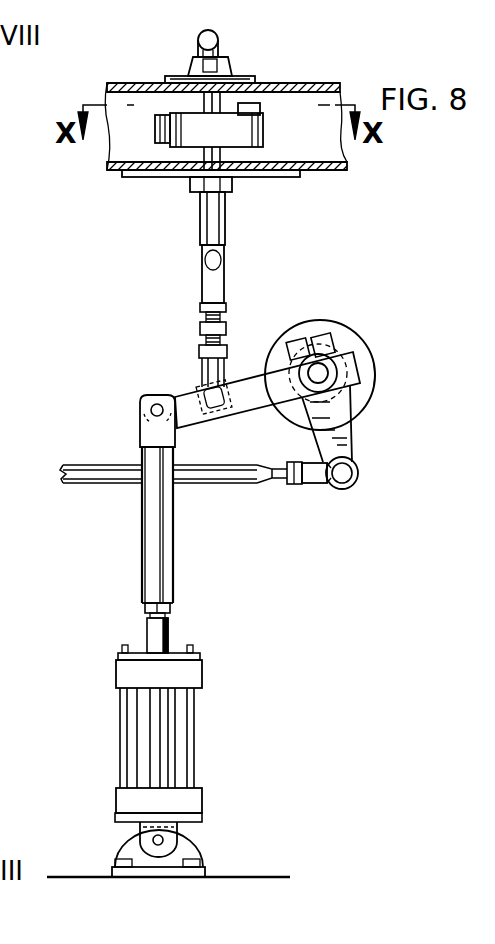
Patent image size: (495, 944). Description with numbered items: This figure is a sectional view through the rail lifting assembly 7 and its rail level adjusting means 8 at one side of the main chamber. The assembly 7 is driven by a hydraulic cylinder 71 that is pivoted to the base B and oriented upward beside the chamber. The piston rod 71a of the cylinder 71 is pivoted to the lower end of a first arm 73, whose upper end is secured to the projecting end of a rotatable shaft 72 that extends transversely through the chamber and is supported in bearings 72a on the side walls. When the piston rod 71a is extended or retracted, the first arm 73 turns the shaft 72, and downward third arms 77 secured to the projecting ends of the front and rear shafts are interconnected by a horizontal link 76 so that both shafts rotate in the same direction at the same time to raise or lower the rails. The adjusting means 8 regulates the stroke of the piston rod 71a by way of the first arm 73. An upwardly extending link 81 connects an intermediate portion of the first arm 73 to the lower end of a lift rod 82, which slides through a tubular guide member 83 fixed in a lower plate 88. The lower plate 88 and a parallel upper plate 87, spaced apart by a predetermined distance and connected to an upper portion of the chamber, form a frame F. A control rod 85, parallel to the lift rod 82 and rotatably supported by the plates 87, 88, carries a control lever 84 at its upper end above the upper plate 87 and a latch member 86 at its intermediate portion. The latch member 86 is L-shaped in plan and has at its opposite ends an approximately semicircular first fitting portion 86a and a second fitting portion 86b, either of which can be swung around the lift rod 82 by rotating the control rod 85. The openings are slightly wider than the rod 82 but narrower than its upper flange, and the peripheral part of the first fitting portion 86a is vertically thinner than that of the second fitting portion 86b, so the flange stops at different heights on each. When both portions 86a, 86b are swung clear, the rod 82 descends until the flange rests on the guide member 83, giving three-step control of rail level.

The rail lifting assembly 7 is at (136, 435).
The rail level adjusting means 8 is at (195, 199).
The hydraulic cylinder 71 is at (148, 740).
The piston rod 71a is at (150, 548).
The rotatable shaft 72 is at (322, 371).
The bearings 72a is at (368, 387).
The first arm 73 is at (247, 383).
The horizontal link 76 is at (73, 478).
The third arms 77 is at (350, 437).
The link 81 is at (205, 287).
The lift rod 82 is at (205, 224).
The tubular guide member 83 is at (230, 188).
The control lever 84 is at (211, 40).
The control rod 85 is at (203, 105).
The latch member 86 is at (157, 131).
The first fitting portion 86a is at (157, 138).
The second fitting portion 86b is at (248, 108).
The upper plate 87 is at (300, 85).
The lower plate 88 is at (325, 165).
The frame F is at (330, 83).
The base B is at (238, 875).